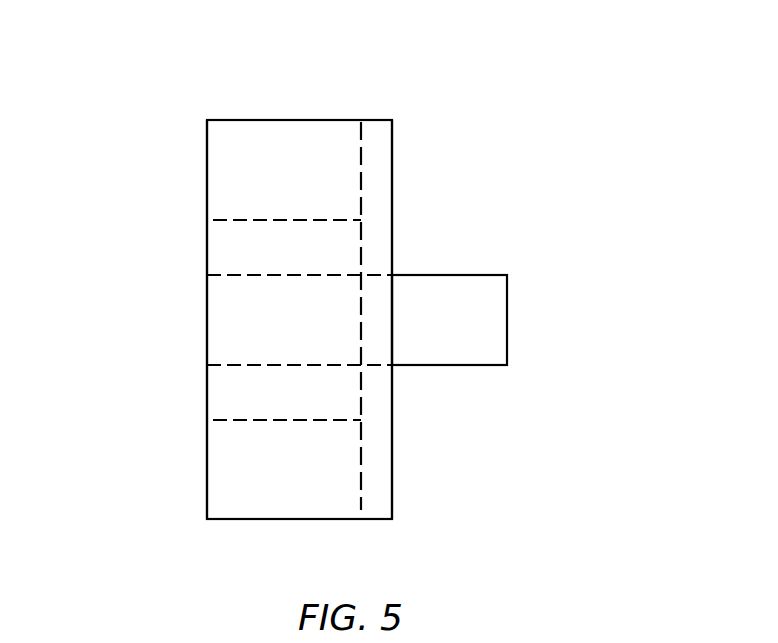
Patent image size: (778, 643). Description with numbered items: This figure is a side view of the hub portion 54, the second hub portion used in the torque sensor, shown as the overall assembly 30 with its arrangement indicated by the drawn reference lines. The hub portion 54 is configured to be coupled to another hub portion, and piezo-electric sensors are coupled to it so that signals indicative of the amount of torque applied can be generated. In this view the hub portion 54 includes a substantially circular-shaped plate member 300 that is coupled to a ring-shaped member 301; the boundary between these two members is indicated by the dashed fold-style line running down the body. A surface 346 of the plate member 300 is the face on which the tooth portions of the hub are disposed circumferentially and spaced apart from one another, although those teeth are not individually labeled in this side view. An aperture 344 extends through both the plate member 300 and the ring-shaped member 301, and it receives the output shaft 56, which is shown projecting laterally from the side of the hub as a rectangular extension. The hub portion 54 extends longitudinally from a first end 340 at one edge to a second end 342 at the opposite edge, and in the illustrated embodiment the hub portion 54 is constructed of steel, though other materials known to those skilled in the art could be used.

The flexible substrate / panel assembly 30 is at (326, 62).
The hub portion 54 is at (339, 118).
The plate member 300 is at (376, 120).
The output shaft 56 is at (445, 275).
The ring-shaped member 301 is at (231, 247).
The aperture 344 is at (235, 364).
The first end 340 is at (207, 470).
The second end 342 is at (392, 462).
The surface 346 is at (358, 498).